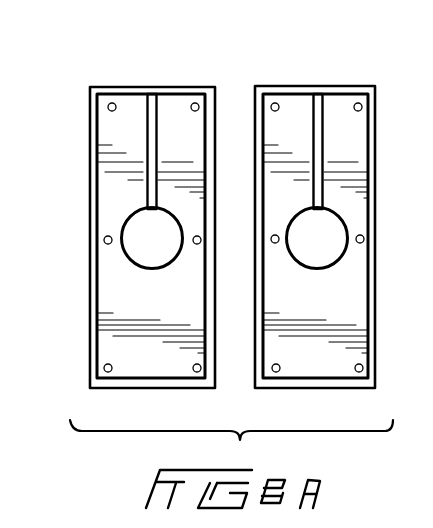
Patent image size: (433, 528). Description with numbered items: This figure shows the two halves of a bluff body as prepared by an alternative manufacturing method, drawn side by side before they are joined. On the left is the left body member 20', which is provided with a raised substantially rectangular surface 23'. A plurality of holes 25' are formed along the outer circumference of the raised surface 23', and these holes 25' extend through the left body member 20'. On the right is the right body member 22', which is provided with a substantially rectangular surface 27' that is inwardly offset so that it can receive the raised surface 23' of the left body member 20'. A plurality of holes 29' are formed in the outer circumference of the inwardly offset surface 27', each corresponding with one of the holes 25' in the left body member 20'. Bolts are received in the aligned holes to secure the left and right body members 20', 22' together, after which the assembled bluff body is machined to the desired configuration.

The left body member 20' is at (152, 203).
The right body member 22' is at (320, 212).
The raised substantially rectangular surface 23' is at (117, 236).
The holes 25' is at (115, 237).
The substantially rectangular surface 27' is at (315, 202).
The holes 29' is at (349, 237).